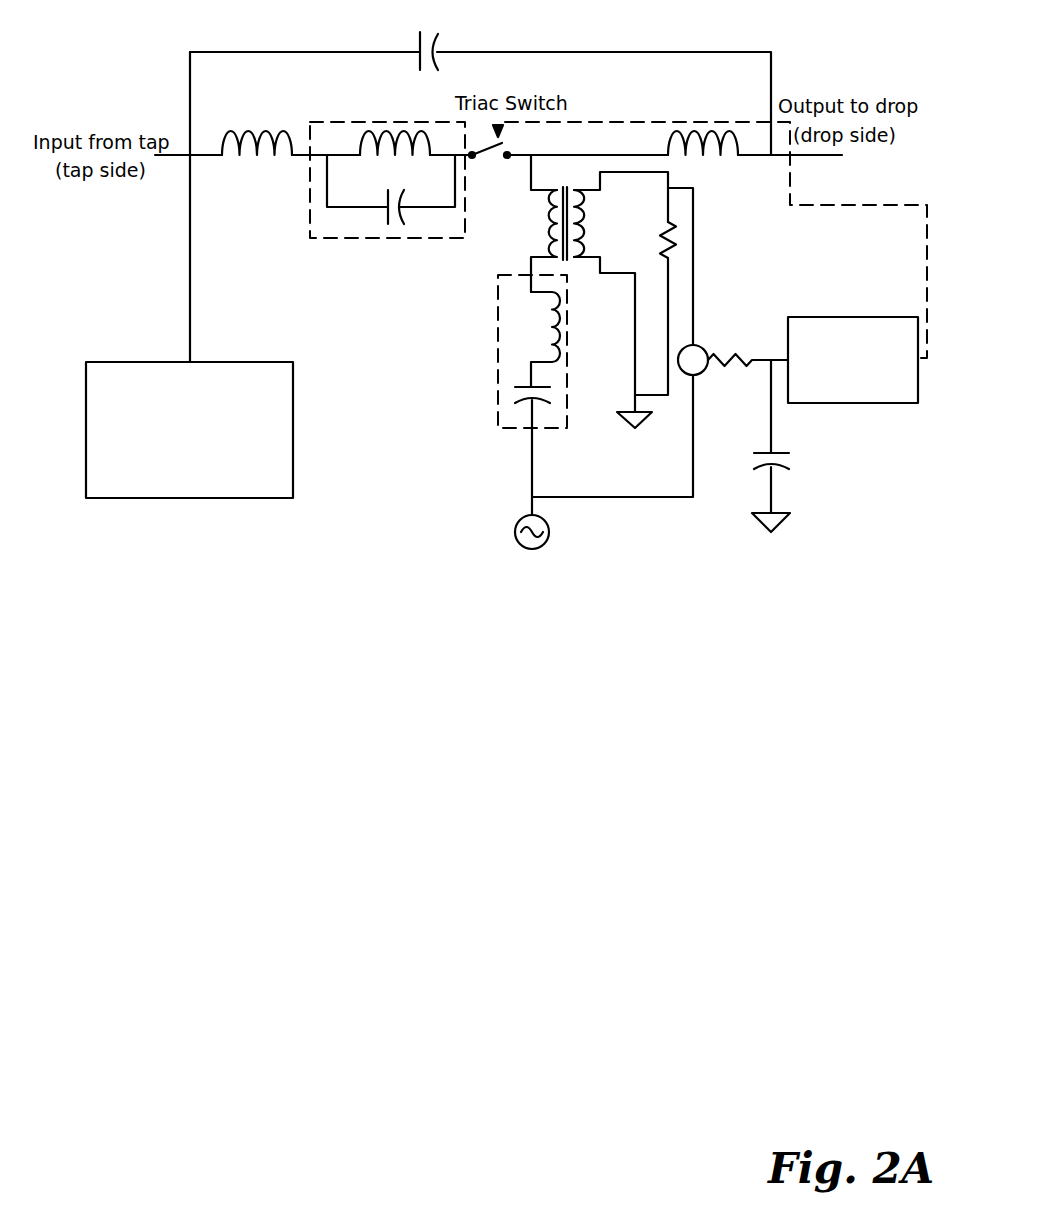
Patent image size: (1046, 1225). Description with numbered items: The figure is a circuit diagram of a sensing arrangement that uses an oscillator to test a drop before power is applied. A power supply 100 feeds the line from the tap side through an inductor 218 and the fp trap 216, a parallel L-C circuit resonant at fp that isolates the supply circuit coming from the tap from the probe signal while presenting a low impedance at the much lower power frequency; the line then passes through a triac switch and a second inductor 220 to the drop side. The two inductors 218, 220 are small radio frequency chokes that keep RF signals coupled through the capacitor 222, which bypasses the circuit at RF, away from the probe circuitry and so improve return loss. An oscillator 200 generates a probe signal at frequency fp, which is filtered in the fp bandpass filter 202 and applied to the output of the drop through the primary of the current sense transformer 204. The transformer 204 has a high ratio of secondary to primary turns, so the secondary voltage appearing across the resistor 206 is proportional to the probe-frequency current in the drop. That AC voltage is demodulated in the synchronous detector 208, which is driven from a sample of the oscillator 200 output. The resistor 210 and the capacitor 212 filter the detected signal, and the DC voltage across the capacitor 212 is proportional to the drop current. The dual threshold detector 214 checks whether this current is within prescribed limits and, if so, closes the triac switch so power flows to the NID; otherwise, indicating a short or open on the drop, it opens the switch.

The power supply 100 is at (189, 430).
The oscillator 200 is at (531, 558).
The fp bandpass filter 202 is at (509, 351).
The current sense transformer 204 is at (587, 291).
The resistor 206 is at (645, 303).
The synchronous detector 208 is at (747, 321).
The resistor 210 is at (748, 372).
The capacitor 212 is at (791, 446).
The dual threshold detector 214 is at (853, 378).
The fp trap 216 is at (387, 188).
The inductor 218 is at (257, 159).
The inductor 220 is at (703, 157).
The capacitor 222 is at (492, 38).